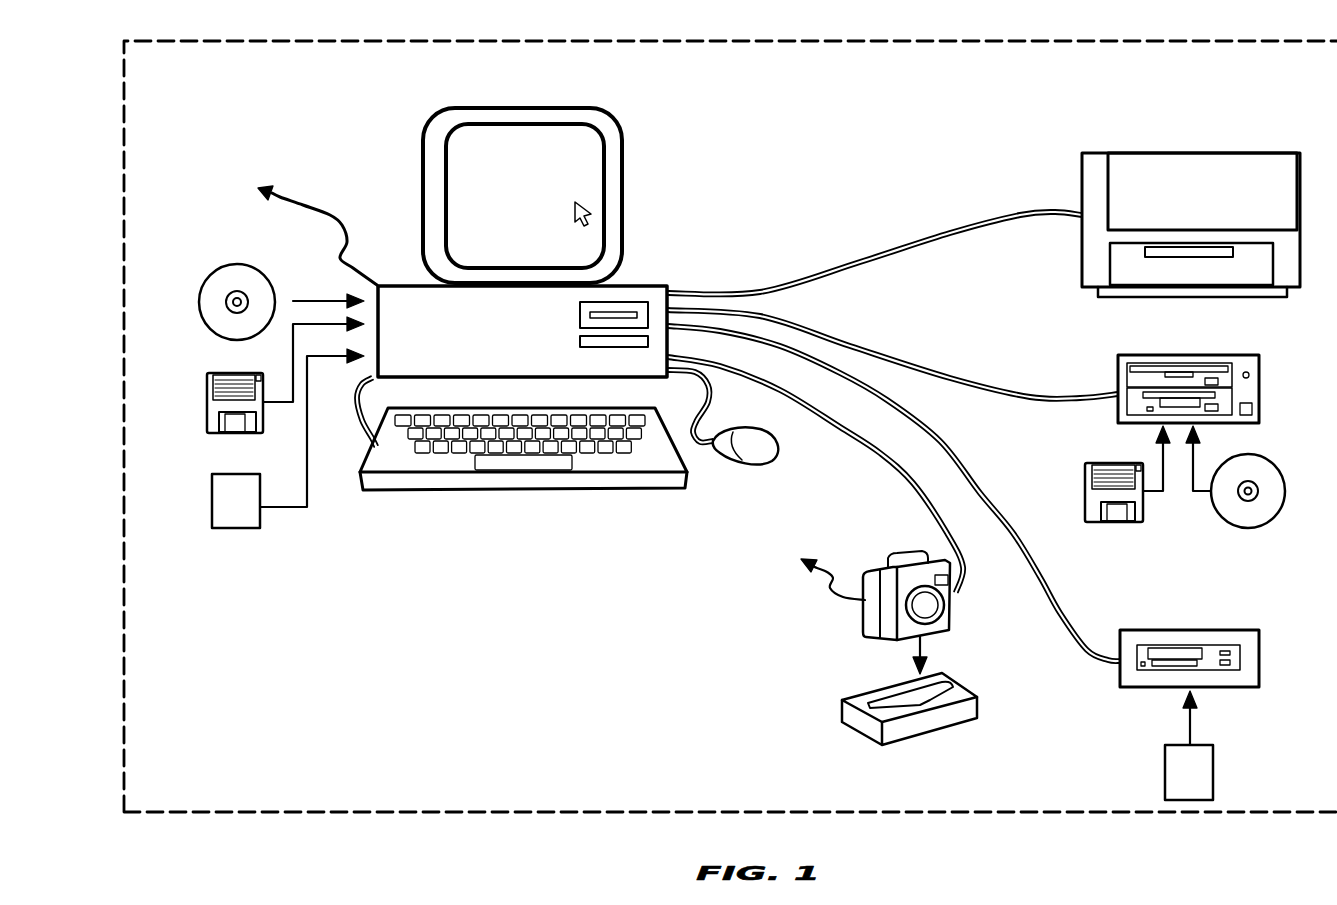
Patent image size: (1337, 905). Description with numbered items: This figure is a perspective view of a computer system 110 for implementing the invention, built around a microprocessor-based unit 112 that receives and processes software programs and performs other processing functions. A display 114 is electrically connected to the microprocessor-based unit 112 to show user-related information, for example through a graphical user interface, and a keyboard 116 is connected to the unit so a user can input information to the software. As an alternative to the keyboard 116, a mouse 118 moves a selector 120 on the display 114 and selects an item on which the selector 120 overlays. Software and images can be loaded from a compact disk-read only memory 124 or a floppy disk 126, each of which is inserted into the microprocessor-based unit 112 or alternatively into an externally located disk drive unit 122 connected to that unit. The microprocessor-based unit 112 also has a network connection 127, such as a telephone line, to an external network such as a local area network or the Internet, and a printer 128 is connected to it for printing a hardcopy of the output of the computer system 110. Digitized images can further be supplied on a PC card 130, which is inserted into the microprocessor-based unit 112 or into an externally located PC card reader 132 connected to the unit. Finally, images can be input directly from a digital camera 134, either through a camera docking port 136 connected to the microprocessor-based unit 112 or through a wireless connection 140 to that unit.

The computer system 110 is at (124, 171).
The microprocessor-based unit 112 is at (404, 286).
The display 114 is at (424, 149).
The keyboard 116 is at (447, 492).
The mouse 118 is at (720, 456).
The selector 120 is at (588, 205).
The externally located disk drive unit 122 is at (1259, 395).
The compact disk-read only memory (CD-ROM) 124 is at (199, 305).
The floppy disk 126 is at (207, 404).
The network connection 127 is at (303, 205).
The printer 128 is at (1185, 152).
The personal computer card (PC card) 130 is at (212, 502).
The PC card reader 132 is at (1259, 663).
The digital camera 134 is at (905, 553).
The camera docking port 136 is at (843, 718).
The wireless connection 140 is at (843, 597).